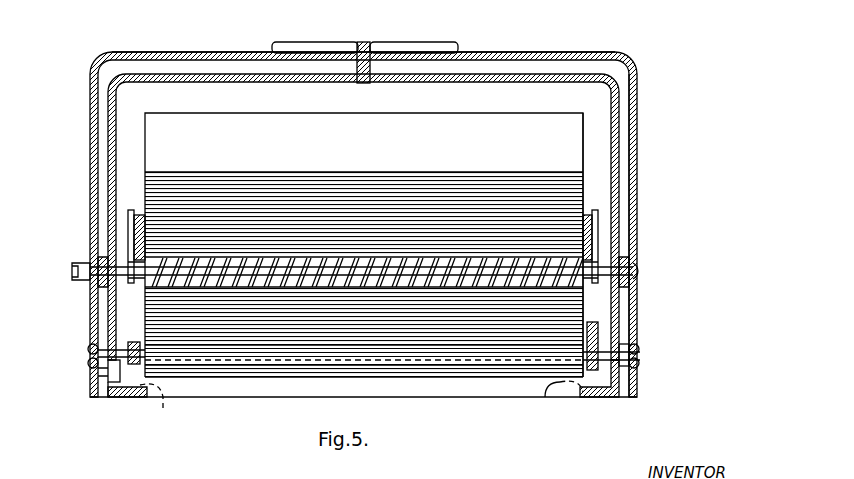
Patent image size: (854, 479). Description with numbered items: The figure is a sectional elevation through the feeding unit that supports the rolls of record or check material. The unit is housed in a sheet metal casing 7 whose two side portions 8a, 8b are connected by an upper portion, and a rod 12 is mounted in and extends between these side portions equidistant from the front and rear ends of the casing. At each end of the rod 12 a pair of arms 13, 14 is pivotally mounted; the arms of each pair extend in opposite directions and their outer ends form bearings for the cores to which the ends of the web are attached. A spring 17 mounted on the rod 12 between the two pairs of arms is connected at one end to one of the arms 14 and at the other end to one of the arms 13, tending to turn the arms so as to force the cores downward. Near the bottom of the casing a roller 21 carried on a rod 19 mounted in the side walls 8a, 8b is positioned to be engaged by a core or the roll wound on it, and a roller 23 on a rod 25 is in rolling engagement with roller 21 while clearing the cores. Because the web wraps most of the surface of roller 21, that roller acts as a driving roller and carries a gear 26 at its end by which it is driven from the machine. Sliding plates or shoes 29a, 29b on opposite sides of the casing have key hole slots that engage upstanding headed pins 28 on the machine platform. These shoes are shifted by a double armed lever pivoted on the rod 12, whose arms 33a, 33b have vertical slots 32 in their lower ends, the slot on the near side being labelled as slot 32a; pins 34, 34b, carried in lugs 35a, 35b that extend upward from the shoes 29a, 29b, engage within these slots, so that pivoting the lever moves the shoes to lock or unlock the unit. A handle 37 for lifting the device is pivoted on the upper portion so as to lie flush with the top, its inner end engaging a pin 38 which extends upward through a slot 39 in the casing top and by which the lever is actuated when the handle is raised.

The sheet metal casing 7 is at (578, 53).
The side portion 8a is at (88, 122).
The side portion 8b is at (637, 134).
The rod 12 is at (282, 262).
The arm 13 is at (136, 288).
The arm 14 is at (128, 240).
The spring 17 is at (402, 260).
The rod 19 is at (615, 336).
The roller 21 is at (347, 338).
The roller 23 is at (262, 365).
The rod 25 is at (135, 352).
The gear 26 is at (600, 325).
The headed pin 28 is at (361, 411).
The sliding plate 29a is at (126, 398).
The sliding plate 29b is at (600, 397).
The vertical slot 32 is at (640, 358).
The bolt 32a is at (95, 360).
The arm 33a is at (117, 152).
The arm 33b is at (612, 125).
The nut 34 is at (108, 370).
The pin 34b is at (636, 370).
The lug 35a is at (110, 386).
The lug 35b is at (535, 385).
The handle 37 is at (298, 48).
The pin 38 is at (372, 42).
The slot 39 is at (350, 78).